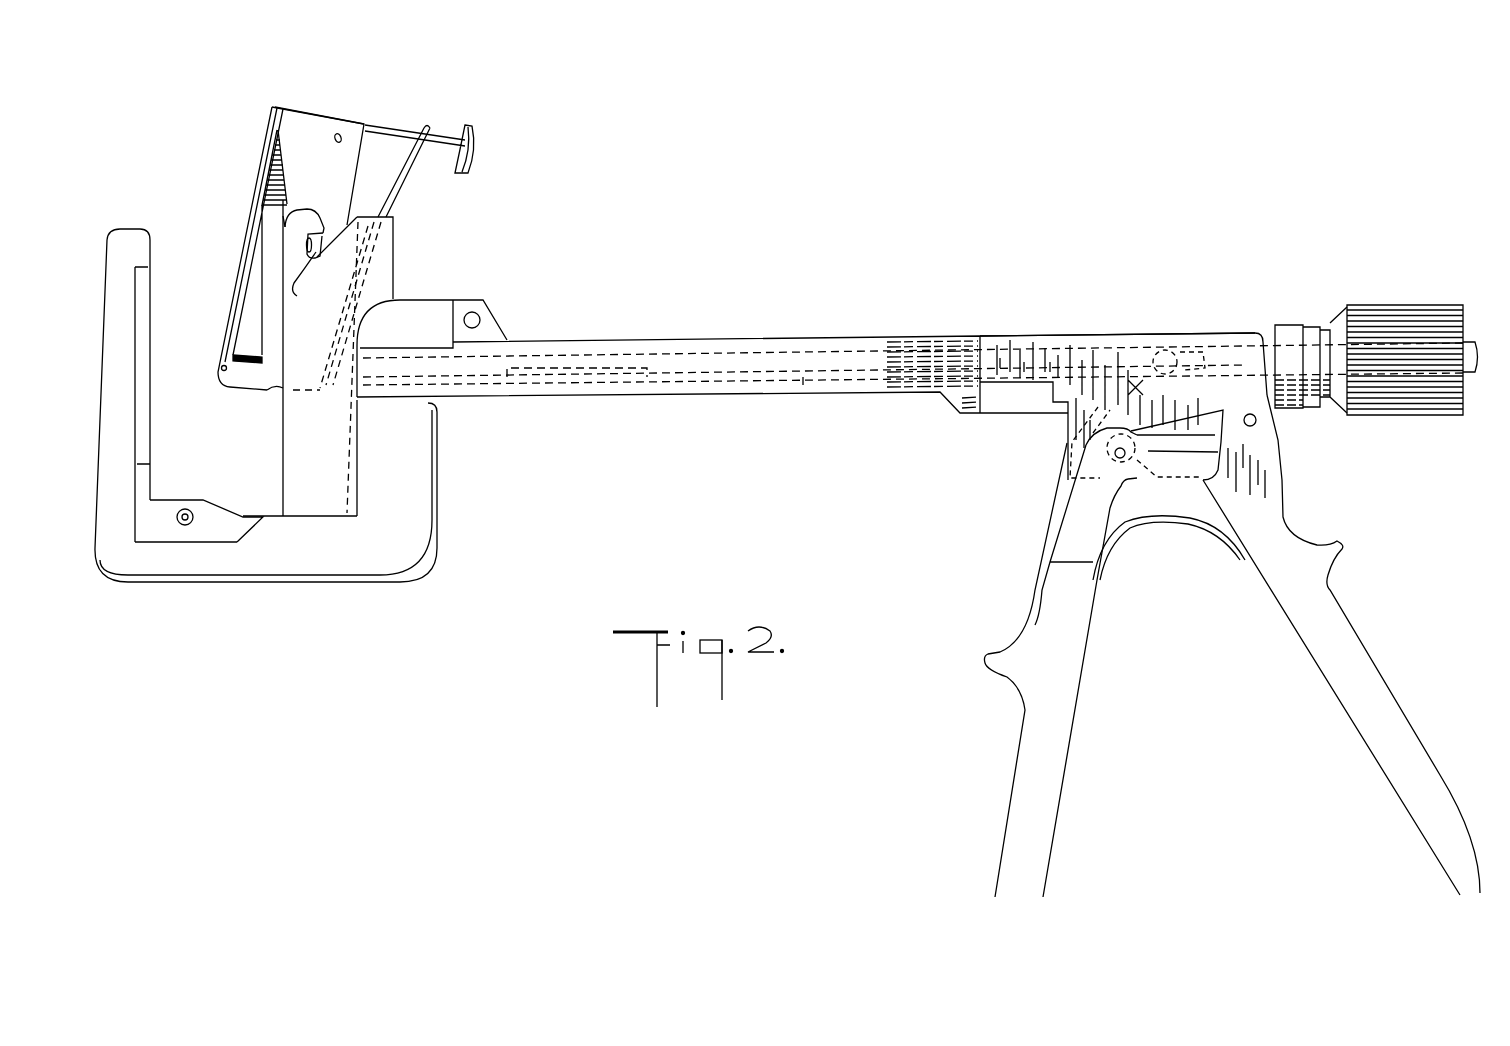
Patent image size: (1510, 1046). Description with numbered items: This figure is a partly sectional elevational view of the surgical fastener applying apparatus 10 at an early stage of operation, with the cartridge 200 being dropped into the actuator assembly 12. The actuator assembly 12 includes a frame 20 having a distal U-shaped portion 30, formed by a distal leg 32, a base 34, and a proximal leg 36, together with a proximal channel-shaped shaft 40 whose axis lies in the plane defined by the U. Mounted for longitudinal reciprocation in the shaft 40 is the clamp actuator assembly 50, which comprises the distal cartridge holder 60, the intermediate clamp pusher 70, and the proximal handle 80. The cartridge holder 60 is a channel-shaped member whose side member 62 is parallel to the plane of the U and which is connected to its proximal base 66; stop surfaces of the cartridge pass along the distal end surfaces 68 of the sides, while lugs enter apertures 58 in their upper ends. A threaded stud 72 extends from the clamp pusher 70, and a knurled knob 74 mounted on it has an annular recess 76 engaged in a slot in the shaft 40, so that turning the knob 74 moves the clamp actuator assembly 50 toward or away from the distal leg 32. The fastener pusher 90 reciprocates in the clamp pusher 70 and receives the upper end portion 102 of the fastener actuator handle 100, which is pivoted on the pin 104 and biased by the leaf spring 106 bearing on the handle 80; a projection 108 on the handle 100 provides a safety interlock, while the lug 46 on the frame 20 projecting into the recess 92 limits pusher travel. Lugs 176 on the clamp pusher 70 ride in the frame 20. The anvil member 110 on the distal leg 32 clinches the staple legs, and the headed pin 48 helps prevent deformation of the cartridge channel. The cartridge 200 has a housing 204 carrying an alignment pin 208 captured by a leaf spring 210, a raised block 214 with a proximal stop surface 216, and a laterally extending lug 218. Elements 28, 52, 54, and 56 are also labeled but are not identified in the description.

The surgical fastener applying apparatus 10 is at (800, 551).
The actuator assembly 12 is at (1276, 266).
The frame 20 is at (793, 340).
The pivot pin 28 is at (168, 507).
The distal U-shaped portion 30 is at (365, 557).
The distal leg 32 is at (108, 226).
The base 34 is at (303, 566).
The proximal leg 36 is at (424, 464).
The shaft 40 is at (657, 340).
The lug 46 is at (526, 384).
The headed pin 48 is at (193, 516).
The clamp actuator assembly 50 is at (1014, 337).
The hook 52 is at (318, 261).
The curved guide 54 is at (305, 283).
The shoulder 56 is at (286, 227).
The apertures 58 is at (333, 225).
The cartridge holder 60 is at (396, 278).
The side member 62 is at (294, 439).
The proximal base 66 is at (372, 262).
The distal end surfaces 68 is at (281, 471).
The clamp pusher 70 is at (1103, 337).
The threaded stud 72 is at (1477, 378).
The knurled knob 74 is at (1430, 322).
The annular recess 76 is at (1311, 327).
The proximal handle 80 is at (1377, 688).
The fastener pusher 90 is at (804, 388).
The recess 92 is at (619, 386).
The fastener actuator handle 100 is at (1057, 747).
The upper end portion 102 is at (1191, 351).
The pin 104 is at (1157, 482).
The leaf spring 106 is at (1160, 530).
The projection 108 is at (1213, 434).
The anvil member 110 is at (150, 335).
The lugs 176 is at (487, 317).
The cartridge 200 is at (273, 88).
The housing 204 is at (305, 118).
The alignment pin 208 is at (372, 122).
The leaf spring 210 is at (397, 190).
The raised block 214 is at (258, 270).
The proximal surface 216 is at (254, 382).
The lug 218 is at (344, 134).